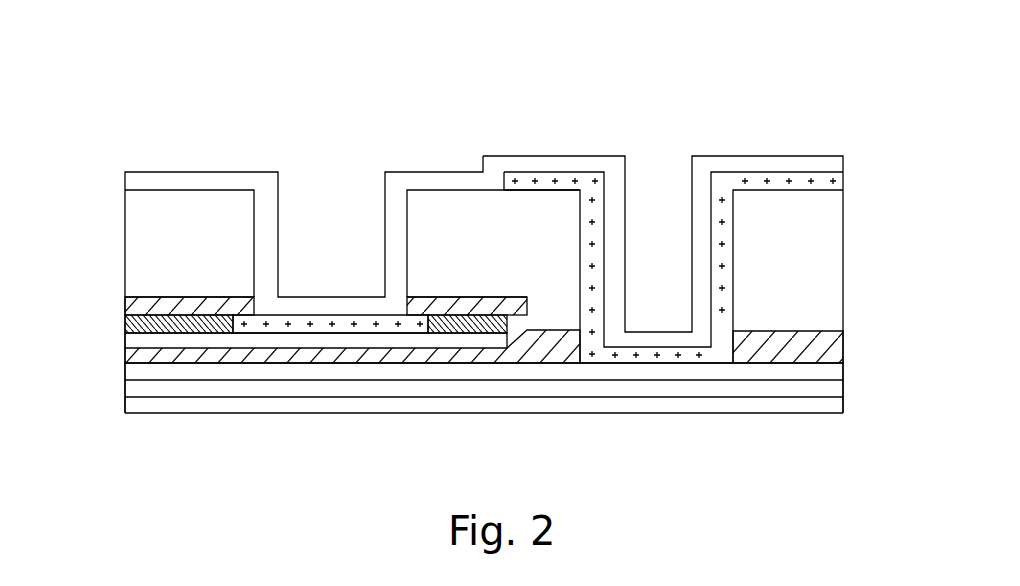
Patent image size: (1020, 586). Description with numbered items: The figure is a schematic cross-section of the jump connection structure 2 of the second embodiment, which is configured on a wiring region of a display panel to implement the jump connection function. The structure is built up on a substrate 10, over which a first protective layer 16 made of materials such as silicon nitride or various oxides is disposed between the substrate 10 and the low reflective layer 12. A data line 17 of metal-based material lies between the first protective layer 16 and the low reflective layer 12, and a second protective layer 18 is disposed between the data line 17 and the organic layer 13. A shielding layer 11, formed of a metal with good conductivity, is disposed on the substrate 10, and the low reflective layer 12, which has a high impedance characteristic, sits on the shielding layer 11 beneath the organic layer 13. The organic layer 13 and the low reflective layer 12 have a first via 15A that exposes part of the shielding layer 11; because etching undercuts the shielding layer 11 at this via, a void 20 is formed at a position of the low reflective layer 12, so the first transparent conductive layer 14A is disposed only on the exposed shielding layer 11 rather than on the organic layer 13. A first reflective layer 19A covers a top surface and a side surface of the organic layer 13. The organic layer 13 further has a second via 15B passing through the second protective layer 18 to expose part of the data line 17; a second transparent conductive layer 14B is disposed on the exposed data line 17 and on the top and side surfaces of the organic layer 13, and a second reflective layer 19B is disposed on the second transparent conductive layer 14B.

The jump connection structure 2 is at (80, 63).
The substrate 10 is at (128, 405).
The shielding layer 11 is at (125, 340).
The low reflective layer 12 is at (128, 322).
The organic layer 13 is at (132, 263).
The first transparent conductive layer 14A is at (330, 325).
The second transparent conductive layer 14B is at (845, 182).
The first via 15A is at (323, 213).
The second via 15B is at (659, 198).
The first protective layer 16 is at (845, 398).
The data line 17 is at (845, 372).
The second protective layer 18 is at (845, 345).
The first reflective layer 19A is at (132, 183).
The second reflective layer 19B is at (845, 158).
The void 20 is at (250, 325).